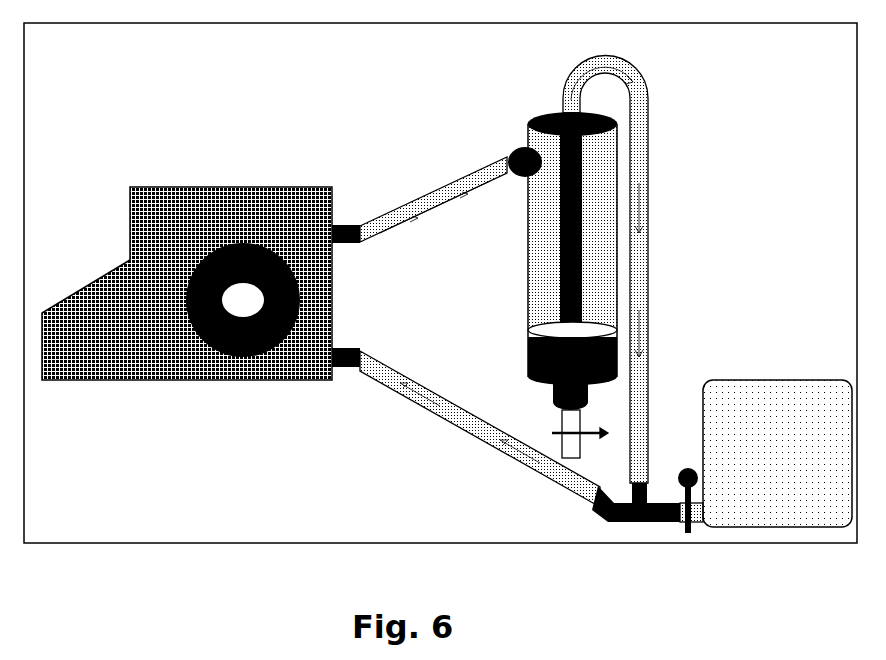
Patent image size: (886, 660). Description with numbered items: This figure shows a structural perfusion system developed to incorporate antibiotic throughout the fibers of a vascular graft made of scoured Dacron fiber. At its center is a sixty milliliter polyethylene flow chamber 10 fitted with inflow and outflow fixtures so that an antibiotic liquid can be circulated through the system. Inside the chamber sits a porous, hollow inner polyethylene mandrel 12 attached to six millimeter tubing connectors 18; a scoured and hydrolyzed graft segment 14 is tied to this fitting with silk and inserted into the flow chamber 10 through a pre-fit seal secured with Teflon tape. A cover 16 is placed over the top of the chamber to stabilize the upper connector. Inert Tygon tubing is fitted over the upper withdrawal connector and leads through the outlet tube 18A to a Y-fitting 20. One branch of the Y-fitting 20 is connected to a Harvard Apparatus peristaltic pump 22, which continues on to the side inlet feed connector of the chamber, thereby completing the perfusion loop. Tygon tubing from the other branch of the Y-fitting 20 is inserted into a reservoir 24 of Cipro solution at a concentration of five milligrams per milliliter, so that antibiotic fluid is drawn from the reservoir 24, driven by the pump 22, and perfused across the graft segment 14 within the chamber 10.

The flow chamber 10 is at (528, 218).
The inner polyethylene mandrel 12 is at (528, 351).
The graft segment 14 is at (565, 247).
The cover 16 is at (527, 122).
The tubing connectors 18 is at (515, 157).
The outlet tube 18A is at (558, 106).
The Y-fitting 20 is at (607, 517).
The peristaltic pump 22 is at (201, 283).
The reservoir 24 is at (777, 453).